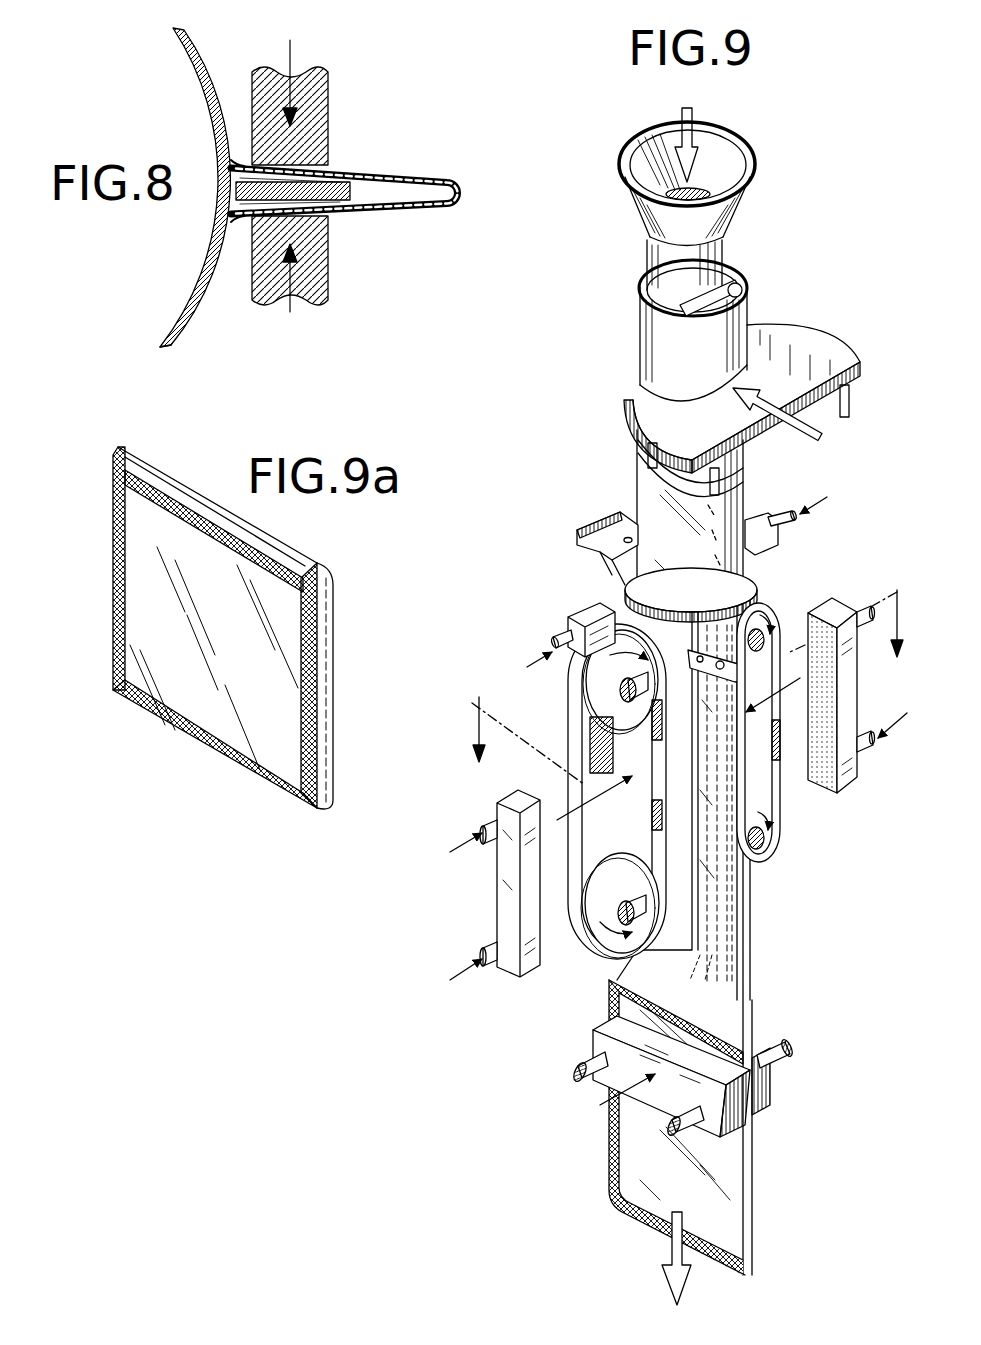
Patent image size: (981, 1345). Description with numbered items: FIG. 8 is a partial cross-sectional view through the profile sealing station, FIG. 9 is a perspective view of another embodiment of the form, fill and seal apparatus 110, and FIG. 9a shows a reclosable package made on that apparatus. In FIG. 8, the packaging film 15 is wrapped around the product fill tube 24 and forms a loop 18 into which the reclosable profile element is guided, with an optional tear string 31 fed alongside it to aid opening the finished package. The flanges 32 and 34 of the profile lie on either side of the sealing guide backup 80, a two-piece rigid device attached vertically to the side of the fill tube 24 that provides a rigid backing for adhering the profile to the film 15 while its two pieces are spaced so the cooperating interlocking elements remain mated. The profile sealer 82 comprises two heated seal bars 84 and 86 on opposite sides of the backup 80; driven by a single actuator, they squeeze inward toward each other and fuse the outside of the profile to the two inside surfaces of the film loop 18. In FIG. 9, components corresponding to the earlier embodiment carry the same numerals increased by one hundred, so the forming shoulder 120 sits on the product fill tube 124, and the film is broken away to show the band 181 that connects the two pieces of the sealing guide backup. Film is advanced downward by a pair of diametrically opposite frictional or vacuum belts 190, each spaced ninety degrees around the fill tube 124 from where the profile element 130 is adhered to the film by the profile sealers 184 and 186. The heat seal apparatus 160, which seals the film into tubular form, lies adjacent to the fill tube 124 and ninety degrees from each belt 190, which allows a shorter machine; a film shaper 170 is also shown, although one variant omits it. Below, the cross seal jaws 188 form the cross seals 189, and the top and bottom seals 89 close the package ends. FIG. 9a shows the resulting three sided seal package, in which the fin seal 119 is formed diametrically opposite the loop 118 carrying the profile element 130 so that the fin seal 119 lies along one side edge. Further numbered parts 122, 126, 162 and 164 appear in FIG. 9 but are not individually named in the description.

In FIG. 8, the packaging film 15 is at (176, 336).
In FIG. 8, the loop 18 is at (357, 190).
In FIG. 8, the product fill tube 24 is at (195, 285).
In FIG. 8, the tear string 31 is at (440, 186).
In FIG. 8, the flange 32 is at (340, 170).
In FIG. 8, the flange 34 is at (330, 215).
In FIG. 8, the sealing guide backup 80 is at (352, 190).
In FIG. 8, the profile sealer 82 is at (340, 194).
In FIG. 8, the seal bar 84 is at (262, 298).
In FIG. 8, the seal bar 86 is at (262, 78).
In FIG. 9, the top and bottom seals 89 is at (640, 1225).
In FIG. 9, the form-fill-seal apparatus 110 is at (778, 210).
In FIG. 9, the loop 118 is at (790, 645).
In FIG. 9a, the fin seal 119 is at (215, 755).
In FIG. 9, the forming shoulder 120 is at (795, 335).
In FIG. 9, the collar cylinder 122 is at (640, 355).
In FIG. 9, the product fill tube 124 is at (722, 250).
In FIG. 9, the product funnel 126 is at (637, 150).
In FIG. 9, the profile element 130 is at (683, 300).
In FIG. 9, the heat seal apparatus 160 is at (526, 624).
In FIG. 9, the drive mounting block 162 is at (588, 615).
In FIG. 9, the mounting pin 164 is at (780, 548).
In FIG. 9, the film shaper 170 is at (580, 517).
In FIG. 9, the band 181 is at (700, 652).
In FIG. 9, the profile sealer 184 is at (848, 682).
In FIG. 9, the profile sealer 186 is at (497, 893).
In FIG. 9, the cross seal jaws 188 is at (765, 1093).
In FIG. 9a, the cross seals 189 is at (188, 628).
In FIG. 9, the frictional or vacuum belts 190 is at (765, 862).